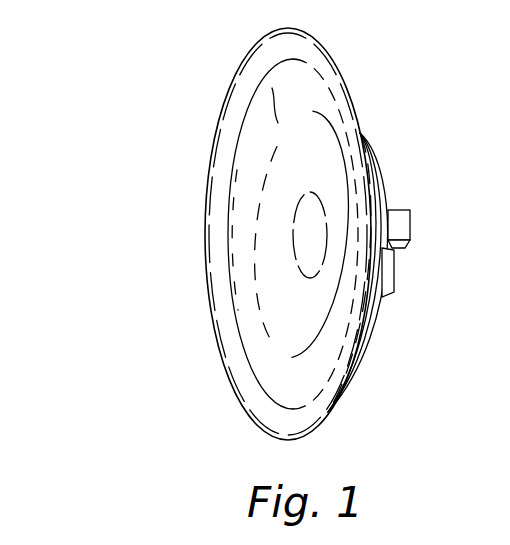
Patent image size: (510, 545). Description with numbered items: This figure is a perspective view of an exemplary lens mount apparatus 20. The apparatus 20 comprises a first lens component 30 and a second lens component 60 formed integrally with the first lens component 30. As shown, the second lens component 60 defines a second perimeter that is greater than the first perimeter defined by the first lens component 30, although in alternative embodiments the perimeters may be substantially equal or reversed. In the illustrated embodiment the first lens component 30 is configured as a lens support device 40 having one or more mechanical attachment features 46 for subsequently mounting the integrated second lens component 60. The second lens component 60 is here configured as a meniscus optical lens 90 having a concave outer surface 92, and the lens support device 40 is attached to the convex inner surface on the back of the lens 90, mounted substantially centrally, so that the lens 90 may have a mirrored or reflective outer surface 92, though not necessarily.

The lens mount apparatus 20 is at (113, 93).
The first lens component 30 is at (398, 108).
The lens support device 40 is at (405, 288).
The mechanical attachment features 46 is at (403, 225).
The second lens component 60 is at (148, 312).
The meniscus optical lens 90 is at (177, 257).
The concave outer surface 92 is at (273, 108).